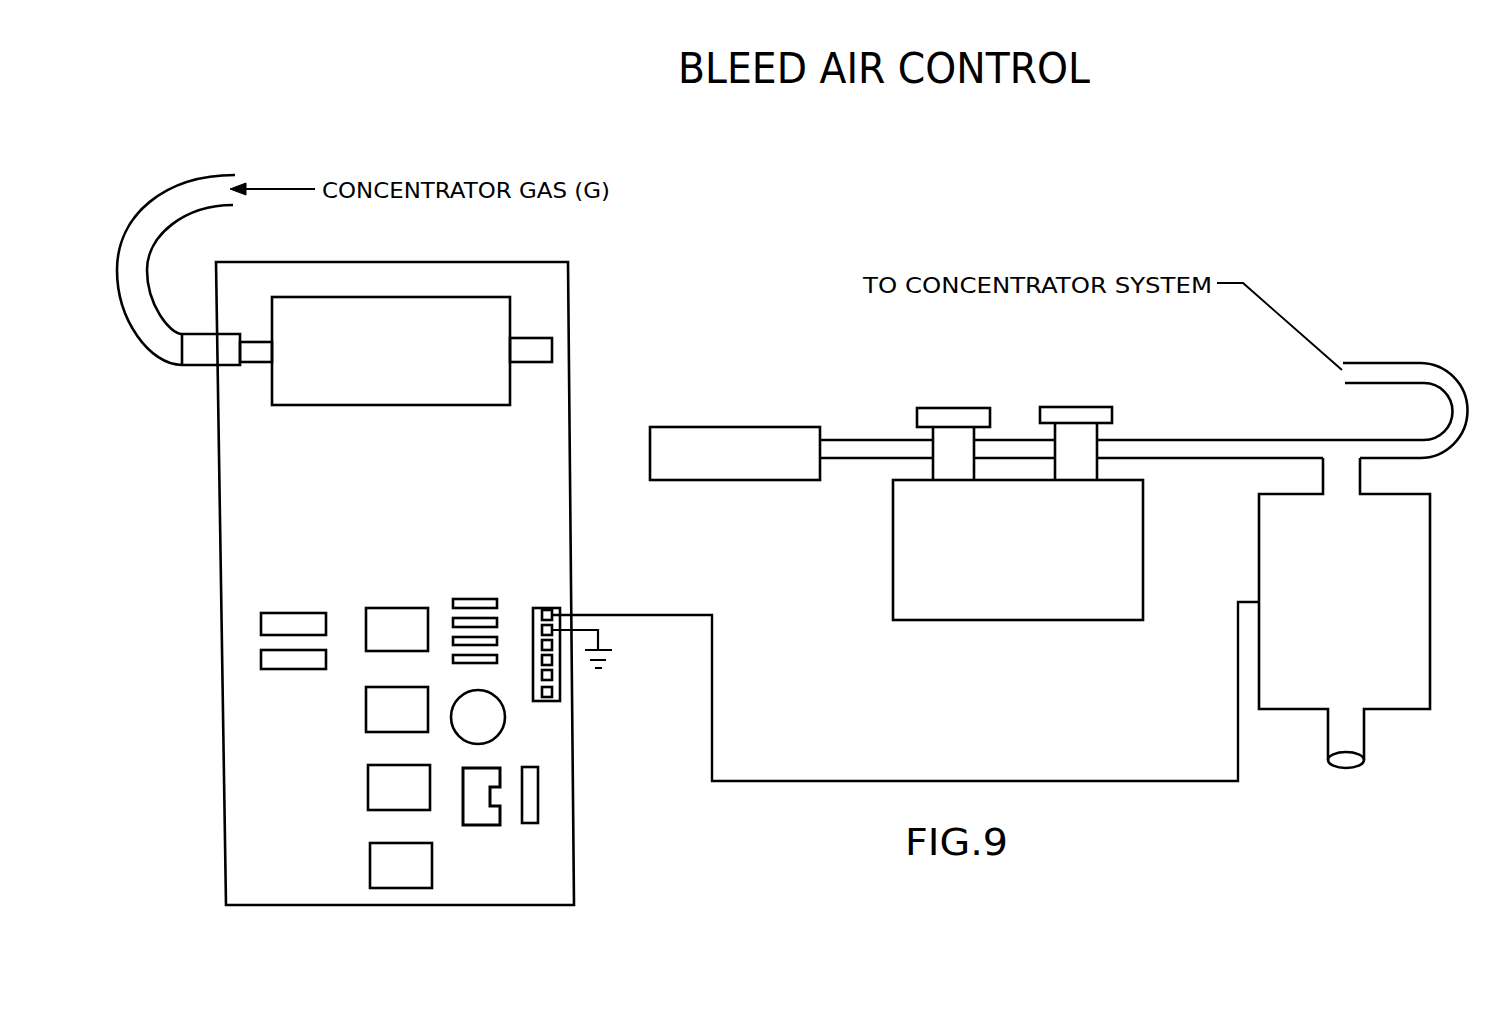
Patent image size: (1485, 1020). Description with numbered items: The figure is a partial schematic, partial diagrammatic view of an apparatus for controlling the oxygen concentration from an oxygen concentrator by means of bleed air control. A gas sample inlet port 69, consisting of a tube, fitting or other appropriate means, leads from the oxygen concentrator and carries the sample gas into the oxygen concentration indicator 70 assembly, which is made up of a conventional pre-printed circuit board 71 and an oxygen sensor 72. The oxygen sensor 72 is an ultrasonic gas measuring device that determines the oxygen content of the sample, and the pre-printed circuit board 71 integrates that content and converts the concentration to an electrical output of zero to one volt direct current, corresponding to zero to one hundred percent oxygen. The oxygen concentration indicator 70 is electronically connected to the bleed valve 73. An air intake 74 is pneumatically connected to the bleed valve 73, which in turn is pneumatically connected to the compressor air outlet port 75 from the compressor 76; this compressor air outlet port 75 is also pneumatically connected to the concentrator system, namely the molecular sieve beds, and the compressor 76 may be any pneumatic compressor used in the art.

The gas sample inlet port 69 is at (180, 367).
The oxygen concentration indicator 70 is at (568, 400).
The pre-printed circuit board 71 is at (539, 540).
The oxygen sensor 72 is at (493, 327).
The bleed valve 73 is at (1430, 648).
The air intake 74 is at (750, 427).
The compressor air outlet port 75 is at (1167, 440).
The compressor 76 is at (1012, 598).